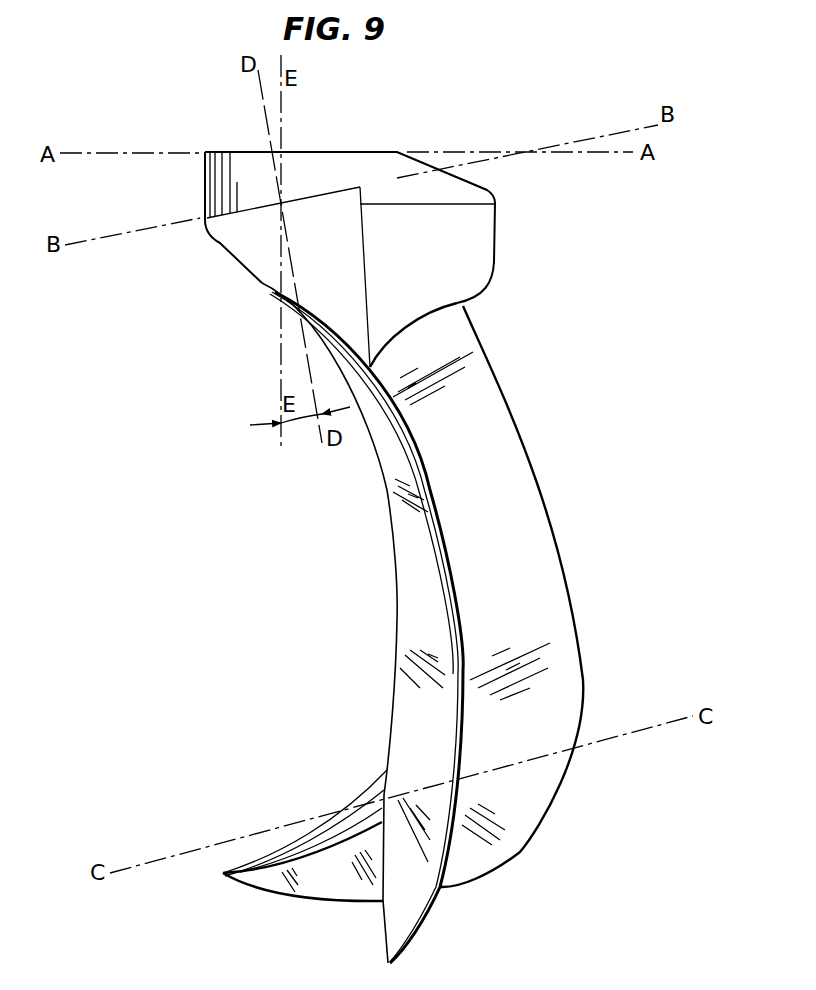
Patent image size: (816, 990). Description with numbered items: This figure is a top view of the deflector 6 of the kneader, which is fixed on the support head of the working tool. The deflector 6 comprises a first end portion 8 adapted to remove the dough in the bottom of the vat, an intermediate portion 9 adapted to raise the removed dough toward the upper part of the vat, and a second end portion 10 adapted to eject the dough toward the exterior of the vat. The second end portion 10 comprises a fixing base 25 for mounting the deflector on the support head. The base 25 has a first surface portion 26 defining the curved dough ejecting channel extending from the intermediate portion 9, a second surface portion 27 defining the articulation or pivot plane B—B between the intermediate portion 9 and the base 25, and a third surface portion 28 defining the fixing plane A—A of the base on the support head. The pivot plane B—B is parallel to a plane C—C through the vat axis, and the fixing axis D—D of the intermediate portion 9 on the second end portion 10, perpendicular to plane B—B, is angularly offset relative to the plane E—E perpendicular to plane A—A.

The deflector 6 is at (565, 542).
The first end portion 8 is at (363, 905).
The intermediate portion 9 is at (396, 621).
The second end portion 10 is at (497, 200).
The fixing base 25 is at (440, 169).
The first surface portion 26 is at (438, 314).
The second surface portion 27 is at (239, 207).
The third surface portion 28 is at (327, 150).